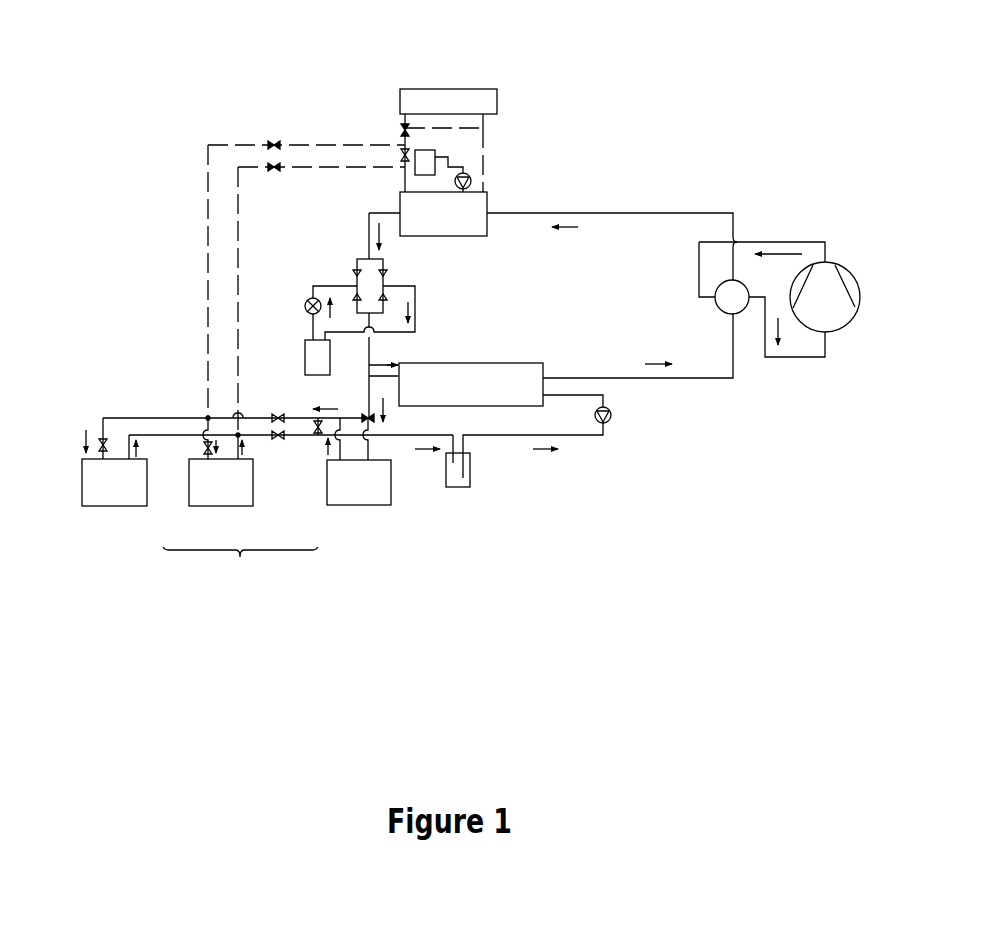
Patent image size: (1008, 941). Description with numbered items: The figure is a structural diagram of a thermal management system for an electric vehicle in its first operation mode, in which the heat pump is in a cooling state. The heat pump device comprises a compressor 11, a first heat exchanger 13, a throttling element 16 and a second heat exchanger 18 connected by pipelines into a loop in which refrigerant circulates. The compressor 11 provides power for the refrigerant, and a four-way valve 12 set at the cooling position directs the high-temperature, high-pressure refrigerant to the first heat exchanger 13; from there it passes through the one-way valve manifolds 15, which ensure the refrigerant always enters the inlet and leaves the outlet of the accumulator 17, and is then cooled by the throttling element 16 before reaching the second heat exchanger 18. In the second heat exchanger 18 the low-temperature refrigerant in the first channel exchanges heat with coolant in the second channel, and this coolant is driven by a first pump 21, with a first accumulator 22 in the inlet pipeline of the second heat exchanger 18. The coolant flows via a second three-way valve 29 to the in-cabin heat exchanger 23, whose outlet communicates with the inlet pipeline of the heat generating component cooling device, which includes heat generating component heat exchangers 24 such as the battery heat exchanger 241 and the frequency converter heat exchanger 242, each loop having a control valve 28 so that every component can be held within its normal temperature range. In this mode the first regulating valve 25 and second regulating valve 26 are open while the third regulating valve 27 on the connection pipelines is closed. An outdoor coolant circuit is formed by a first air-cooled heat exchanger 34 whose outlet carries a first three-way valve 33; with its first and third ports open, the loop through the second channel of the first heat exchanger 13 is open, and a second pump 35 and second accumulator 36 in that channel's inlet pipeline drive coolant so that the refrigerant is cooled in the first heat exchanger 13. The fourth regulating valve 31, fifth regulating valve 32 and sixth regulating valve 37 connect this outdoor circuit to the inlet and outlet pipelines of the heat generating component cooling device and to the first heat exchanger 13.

The compressor 11 is at (826, 283).
The four-way valve 12 is at (733, 305).
The first heat exchanger 13 is at (458, 227).
The one-way valve manifolds 15 is at (384, 275).
The throttling element 16 is at (308, 300).
The accumulator 17 is at (317, 355).
The second heat exchanger 18 is at (468, 373).
The first pump 21 is at (608, 421).
The first accumulator 22 is at (465, 482).
The in-cabin heat exchanger 23 is at (377, 501).
The heat generating component heat exchanger 24 is at (240, 565).
The battery heat exchanger 241 is at (227, 500).
The frequency converter heat exchanger 242 is at (120, 500).
The first regulating valve 25 is at (278, 435).
The second regulating valve 26 is at (208, 447).
The third regulating valve 27 is at (278, 418).
The control valve 28 is at (207, 443).
The second three-way valve 29 is at (368, 425).
The fourth regulating valve 31 is at (275, 167).
The fifth regulating valve 32 is at (276, 145).
The first three-way valve 33 is at (405, 130).
The first air-cooled heat exchanger 34 is at (427, 98).
The second pump 35 is at (467, 177).
The second accumulator 36 is at (422, 162).
The sixth regulating valve 37 is at (405, 158).